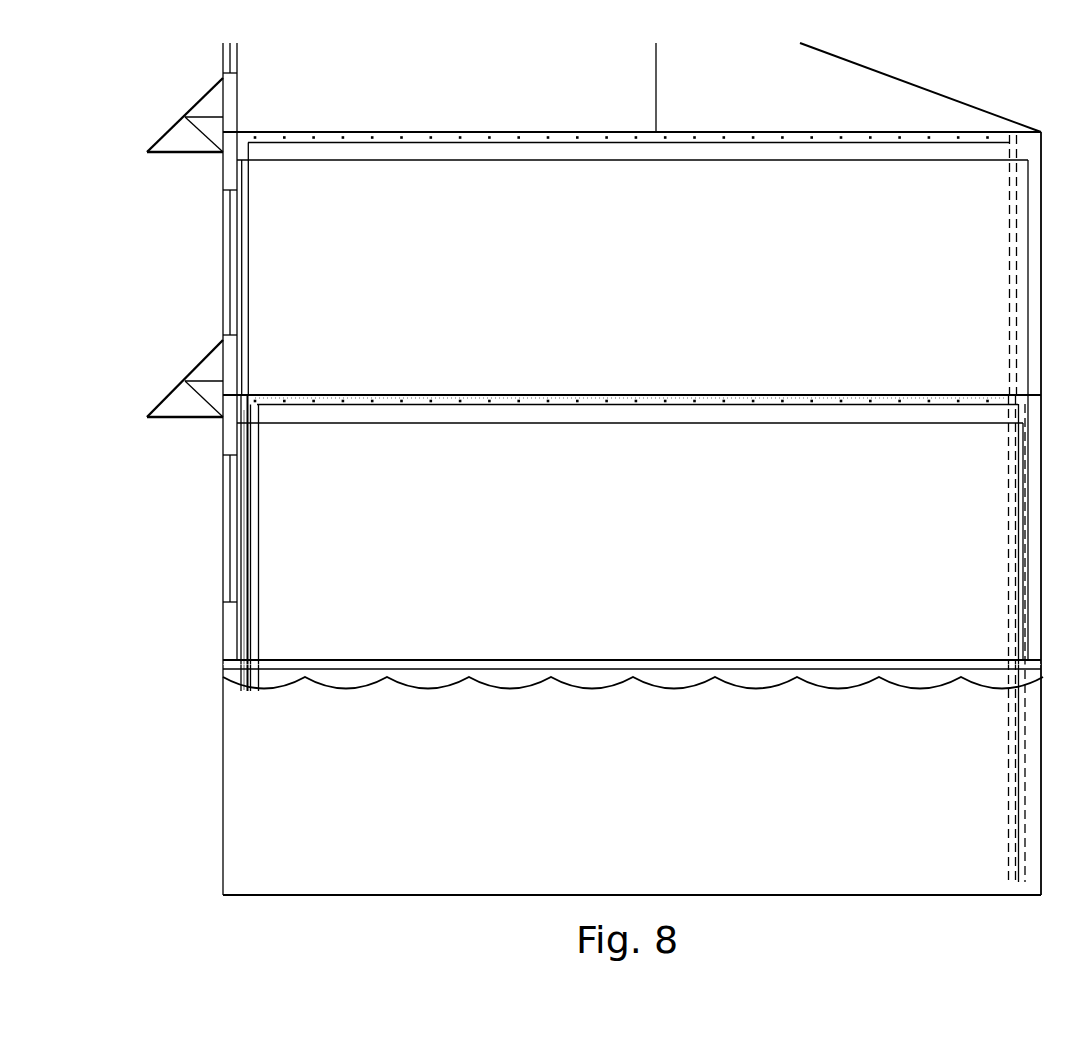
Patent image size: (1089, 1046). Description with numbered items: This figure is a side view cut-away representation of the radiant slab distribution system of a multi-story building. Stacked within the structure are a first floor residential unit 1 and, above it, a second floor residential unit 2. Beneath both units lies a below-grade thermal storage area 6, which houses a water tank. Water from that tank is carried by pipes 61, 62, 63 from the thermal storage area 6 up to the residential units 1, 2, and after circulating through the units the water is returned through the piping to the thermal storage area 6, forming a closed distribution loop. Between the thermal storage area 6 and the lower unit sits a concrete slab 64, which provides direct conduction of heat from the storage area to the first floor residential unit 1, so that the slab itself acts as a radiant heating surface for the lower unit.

The first floor residential unit 1 is at (408, 452).
The second floor residential unit 2 is at (408, 218).
The below-grade thermal storage area 6 is at (408, 710).
The pipe 61 is at (467, 394).
The pipe 62 is at (258, 602).
The pipe 63 is at (1007, 777).
The concrete slab 64 is at (697, 670).